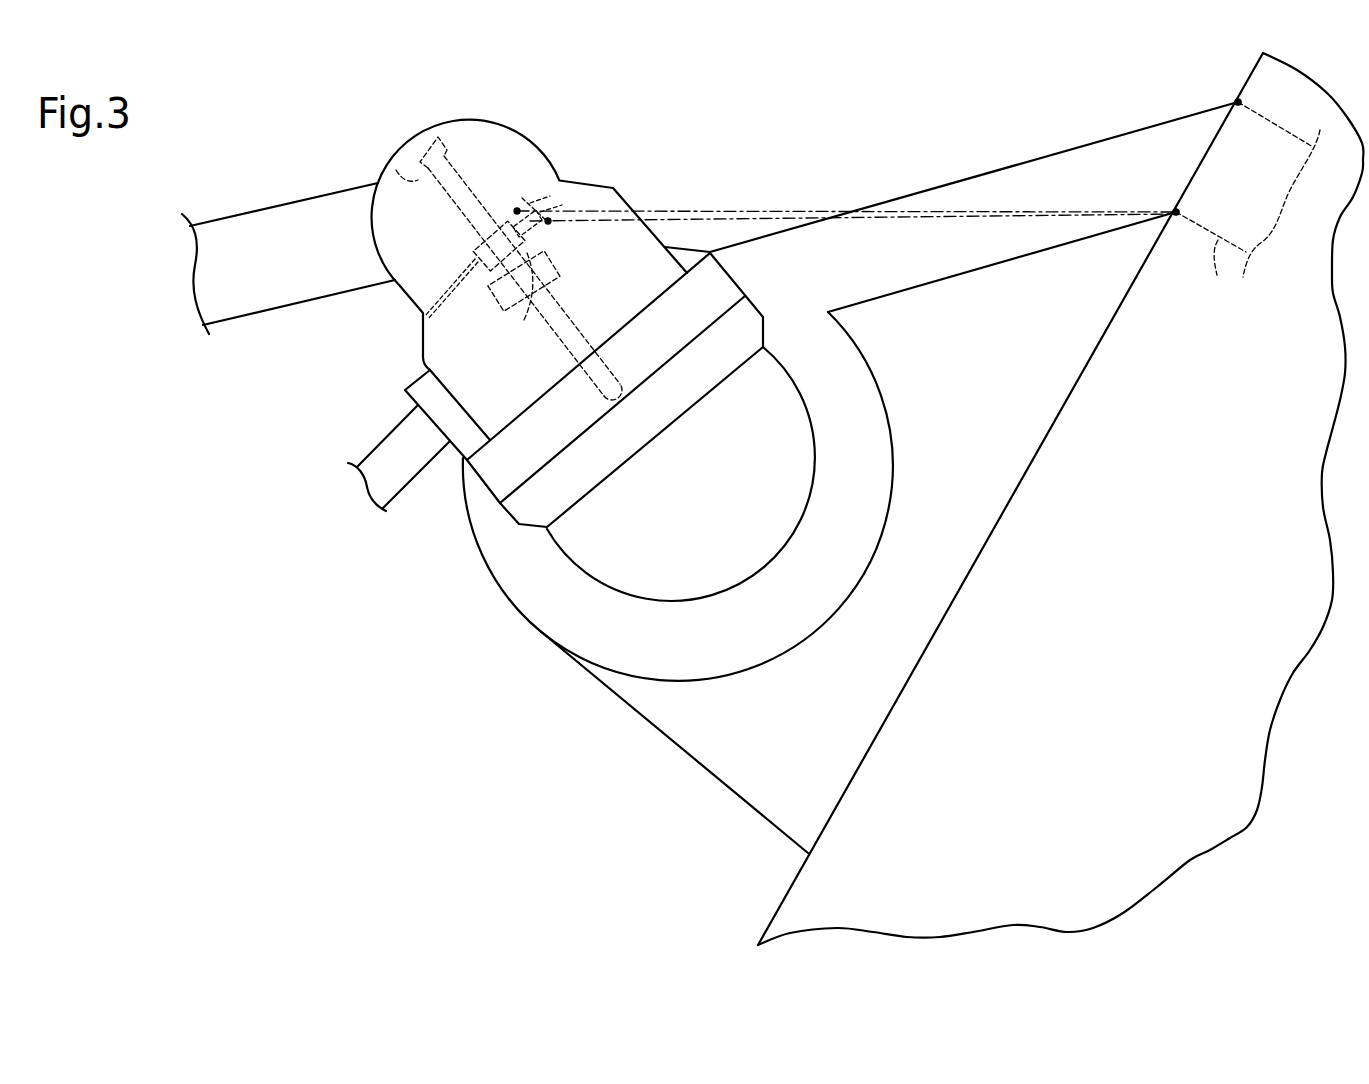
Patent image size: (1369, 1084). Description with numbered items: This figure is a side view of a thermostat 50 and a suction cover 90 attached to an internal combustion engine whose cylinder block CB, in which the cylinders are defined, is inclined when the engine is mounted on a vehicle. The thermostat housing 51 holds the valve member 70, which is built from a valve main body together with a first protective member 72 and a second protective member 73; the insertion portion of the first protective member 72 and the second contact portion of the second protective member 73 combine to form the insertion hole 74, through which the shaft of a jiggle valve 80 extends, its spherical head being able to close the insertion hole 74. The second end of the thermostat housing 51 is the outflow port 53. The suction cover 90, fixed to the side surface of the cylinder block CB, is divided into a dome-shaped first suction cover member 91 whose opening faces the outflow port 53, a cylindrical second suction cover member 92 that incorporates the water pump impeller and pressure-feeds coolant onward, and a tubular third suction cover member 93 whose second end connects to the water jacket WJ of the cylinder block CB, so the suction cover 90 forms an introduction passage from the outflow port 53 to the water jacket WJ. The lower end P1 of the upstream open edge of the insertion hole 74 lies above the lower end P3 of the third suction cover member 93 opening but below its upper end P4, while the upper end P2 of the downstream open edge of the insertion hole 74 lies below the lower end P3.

The thermostat 50 is at (596, 147).
The thermostat housing 51 is at (407, 296).
The outflow port 53 is at (678, 355).
The valve member 70 is at (509, 268).
The first protective member 72 is at (509, 268).
The second protective member 73 is at (474, 229).
The insertion hole 74 is at (526, 196).
The jiggle valve 80 is at (508, 178).
The suction cover 90 is at (924, 166).
The first suction cover member 91 is at (557, 548).
The second suction cover member 92 is at (871, 366).
The third suction cover member 93 is at (974, 272).
The cylinder block CB is at (1040, 455).
The water jacket WJ is at (1248, 202).
The lower end in the upstream open edge of the insertion hole P1 is at (514, 208).
The upper end in the downstream open edge of the insertion hole P2 is at (553, 228).
The lower end in the open edge of the second end of the third suction cover member P3 is at (1176, 216).
The upper end in the open edge of the second end of the third suction cover member P4 is at (1236, 102).